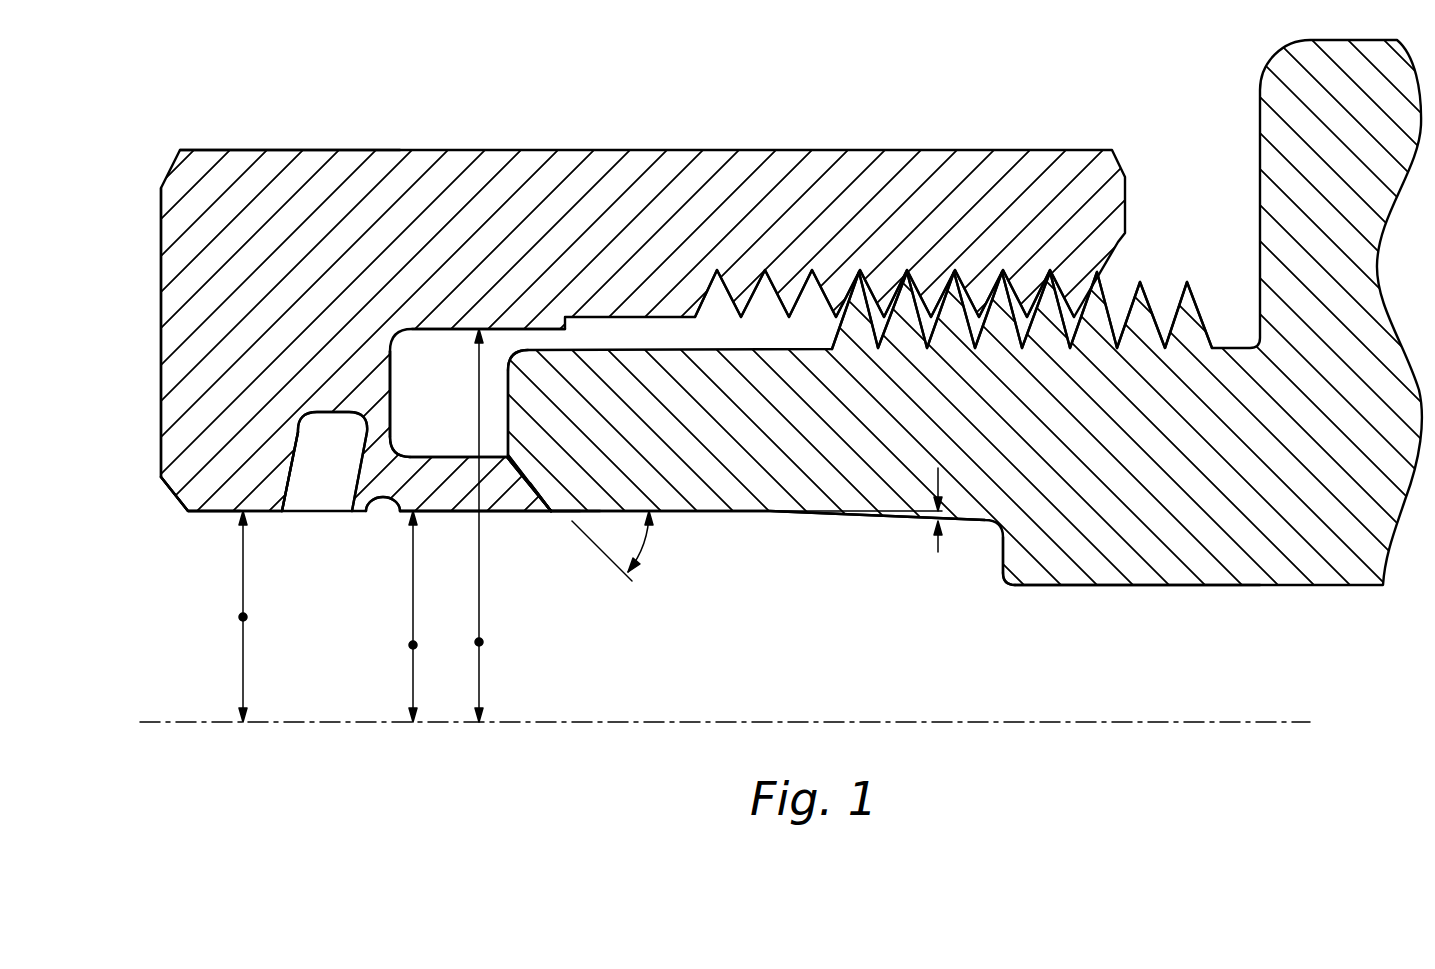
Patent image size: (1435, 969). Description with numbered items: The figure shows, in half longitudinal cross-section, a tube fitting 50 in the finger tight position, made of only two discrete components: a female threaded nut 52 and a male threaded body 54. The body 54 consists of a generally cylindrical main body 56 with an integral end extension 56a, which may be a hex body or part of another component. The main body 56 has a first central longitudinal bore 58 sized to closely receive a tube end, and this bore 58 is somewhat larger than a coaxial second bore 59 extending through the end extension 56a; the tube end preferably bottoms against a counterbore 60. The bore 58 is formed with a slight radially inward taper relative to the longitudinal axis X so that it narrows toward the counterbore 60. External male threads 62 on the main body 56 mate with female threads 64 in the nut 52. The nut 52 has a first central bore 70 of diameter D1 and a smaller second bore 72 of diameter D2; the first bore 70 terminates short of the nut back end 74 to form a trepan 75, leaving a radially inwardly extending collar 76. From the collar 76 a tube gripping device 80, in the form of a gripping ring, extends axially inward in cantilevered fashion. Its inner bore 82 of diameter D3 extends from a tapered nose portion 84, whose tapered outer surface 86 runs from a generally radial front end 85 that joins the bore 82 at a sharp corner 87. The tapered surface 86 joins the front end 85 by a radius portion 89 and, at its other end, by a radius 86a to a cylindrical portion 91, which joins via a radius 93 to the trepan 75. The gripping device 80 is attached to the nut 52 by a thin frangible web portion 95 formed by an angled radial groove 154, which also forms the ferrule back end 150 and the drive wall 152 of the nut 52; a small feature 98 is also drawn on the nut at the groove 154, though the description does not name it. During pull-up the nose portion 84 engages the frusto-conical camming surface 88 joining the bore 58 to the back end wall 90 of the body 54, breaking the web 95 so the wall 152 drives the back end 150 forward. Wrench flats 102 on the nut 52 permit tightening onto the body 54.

The tube fitting 50 is at (764, 74).
The female threaded nut 52 is at (541, 140).
The male threaded body 54 is at (1011, 592).
The main body 56 is at (1130, 490).
The end extension 56a is at (1262, 77).
The first central longitudinal bore 58 is at (745, 515).
The second bore 59 is at (1082, 588).
The counterbore 60 is at (1002, 552).
The external male threads 62 is at (1152, 300).
The female threads 64 is at (930, 272).
The first central bore 70 is at (500, 325).
The second bore 72 is at (208, 512).
The nut back end 74 is at (161, 247).
The collar 76 is at (227, 437).
The trepan 75 is at (407, 377).
The tube gripping device 80 is at (490, 522).
The inner bore 82 is at (447, 512).
The nose portion 84 is at (503, 492).
The front end 85 is at (552, 505).
The tapered outer surface 86 is at (520, 465).
The radius 86a is at (512, 447).
The sharp corner 87 is at (556, 512).
The camming surface 88 is at (543, 496).
The radius portion 89 is at (546, 492).
The back end wall 90 is at (507, 398).
The cylindrical portion 91 is at (448, 458).
The radius 93 is at (405, 440).
The frangible web portion 95 is at (378, 427).
The relief bump 98 is at (383, 522).
The wrench flats 102 is at (272, 150).
The back end 150 is at (353, 477).
The radially inwardly extending wall 152 is at (297, 485).
The radial groove 154 is at (318, 518).
The first diameter D1 is at (479, 642).
The second diameter D2 is at (243, 617).
The diameter of bore 82 D3 is at (413, 645).
The longitudinal axis X is at (185, 722).